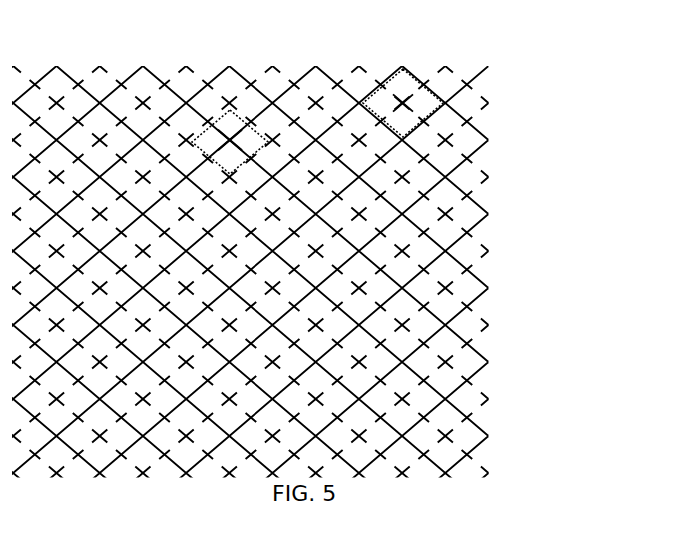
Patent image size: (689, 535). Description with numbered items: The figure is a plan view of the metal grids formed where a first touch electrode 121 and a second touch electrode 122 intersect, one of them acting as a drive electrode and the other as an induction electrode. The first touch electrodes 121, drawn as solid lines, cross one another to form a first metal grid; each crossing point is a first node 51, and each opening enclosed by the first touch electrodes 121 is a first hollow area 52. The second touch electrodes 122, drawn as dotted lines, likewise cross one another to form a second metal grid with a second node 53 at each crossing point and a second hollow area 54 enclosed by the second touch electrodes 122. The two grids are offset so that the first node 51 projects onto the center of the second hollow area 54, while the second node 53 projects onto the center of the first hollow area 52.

The first touch electrode 121 is at (458, 92).
The second touch electrode 122 is at (457, 148).
The first node 51 is at (230, 138).
The first hollow area 52 is at (413, 76).
The second node 53 is at (402, 104).
The second hollow area 54 is at (220, 118).